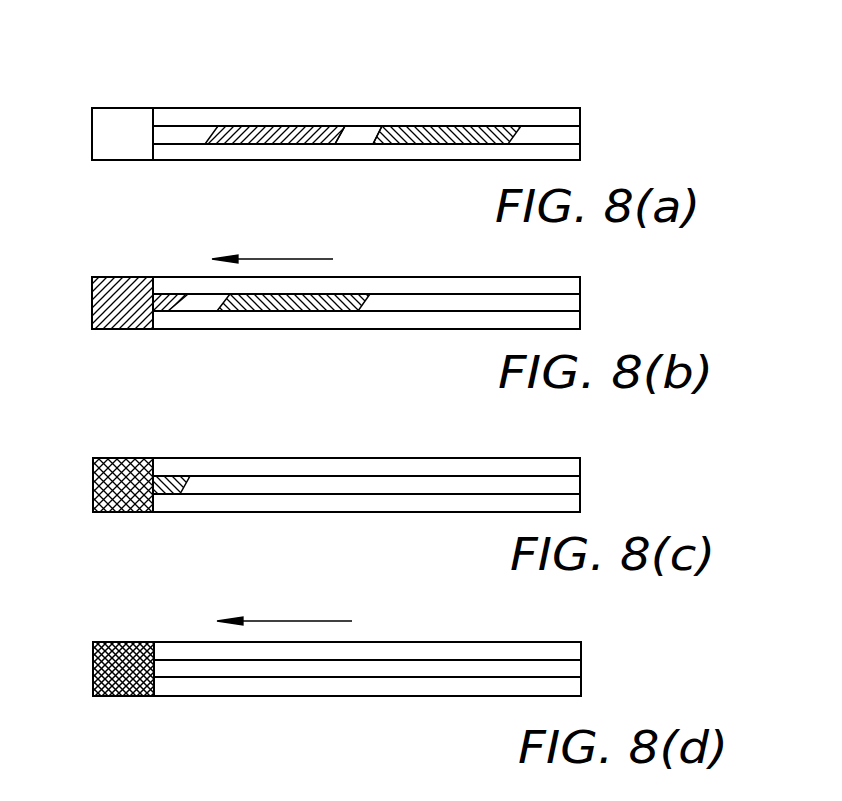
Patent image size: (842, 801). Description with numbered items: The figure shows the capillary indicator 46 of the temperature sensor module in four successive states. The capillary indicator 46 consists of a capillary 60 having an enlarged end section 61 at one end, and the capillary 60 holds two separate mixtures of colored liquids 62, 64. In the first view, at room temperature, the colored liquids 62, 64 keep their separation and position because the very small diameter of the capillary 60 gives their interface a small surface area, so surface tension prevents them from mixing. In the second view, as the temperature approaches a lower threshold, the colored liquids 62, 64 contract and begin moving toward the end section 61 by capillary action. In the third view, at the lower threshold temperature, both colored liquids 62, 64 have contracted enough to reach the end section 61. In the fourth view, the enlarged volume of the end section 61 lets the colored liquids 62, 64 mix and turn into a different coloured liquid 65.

The capillary indicator 46 is at (612, 100).
The capillary 60 is at (363, 132).
The enlarged end section 61 is at (106, 121).
The colored liquid 62 is at (259, 118).
The colored liquid 64 is at (471, 131).
The different coloured liquid 65 is at (128, 690).